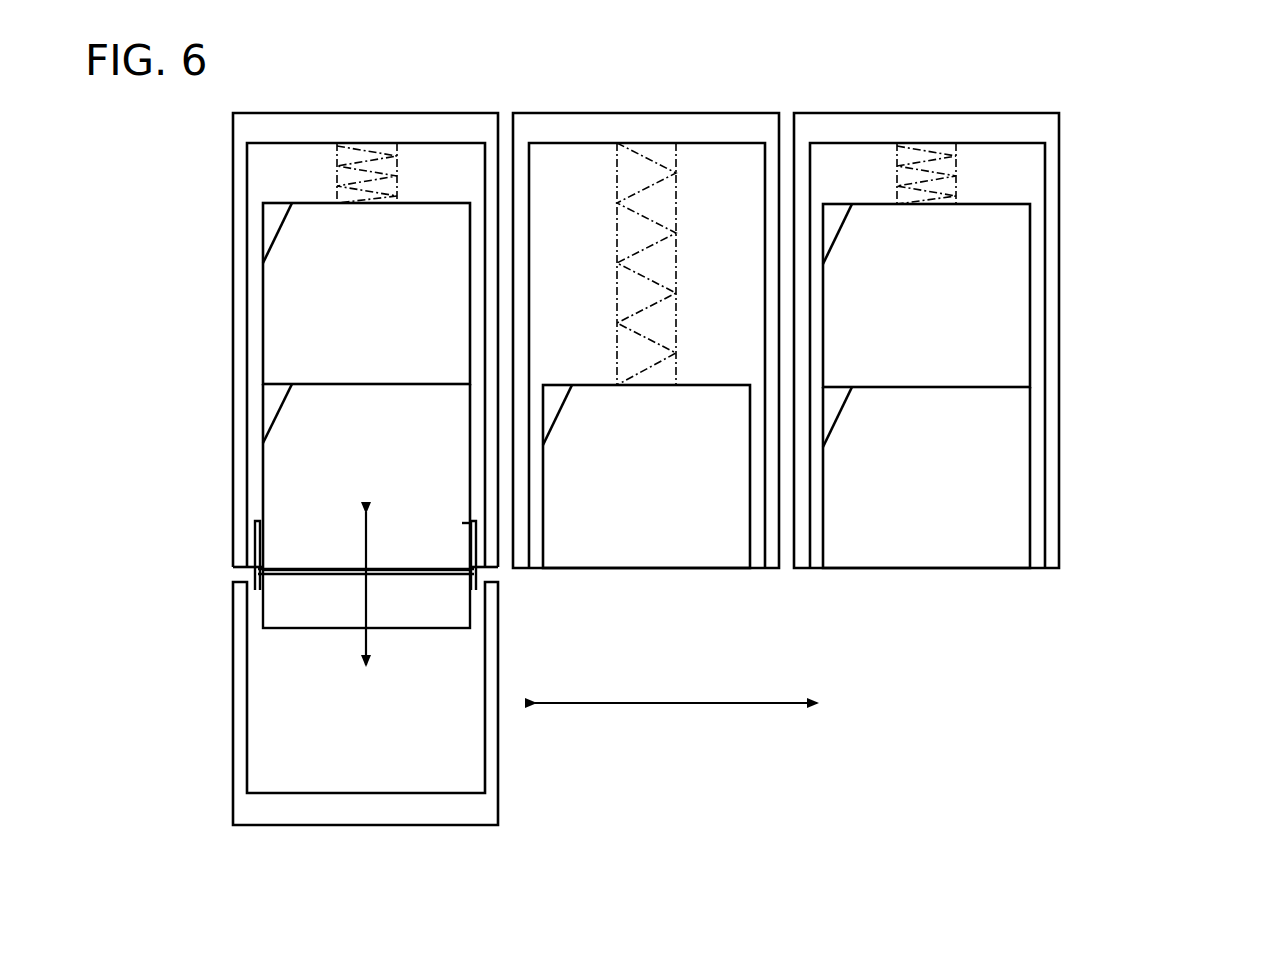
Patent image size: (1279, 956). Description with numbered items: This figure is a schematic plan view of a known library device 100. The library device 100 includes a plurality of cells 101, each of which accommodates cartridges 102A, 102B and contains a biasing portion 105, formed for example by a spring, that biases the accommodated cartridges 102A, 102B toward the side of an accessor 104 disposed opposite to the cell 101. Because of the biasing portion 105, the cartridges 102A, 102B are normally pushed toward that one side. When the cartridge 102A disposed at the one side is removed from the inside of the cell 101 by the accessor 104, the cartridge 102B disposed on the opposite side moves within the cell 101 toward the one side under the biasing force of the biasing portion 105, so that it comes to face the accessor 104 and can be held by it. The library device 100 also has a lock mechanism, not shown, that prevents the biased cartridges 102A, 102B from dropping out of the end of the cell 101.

The library device 100 is at (1160, 88).
The cell 101 is at (462, 104).
The cartridge 102A is at (290, 491).
The cartridge 102B is at (290, 297).
The accessor 104 is at (417, 812).
The biasing portion 105 is at (374, 152).